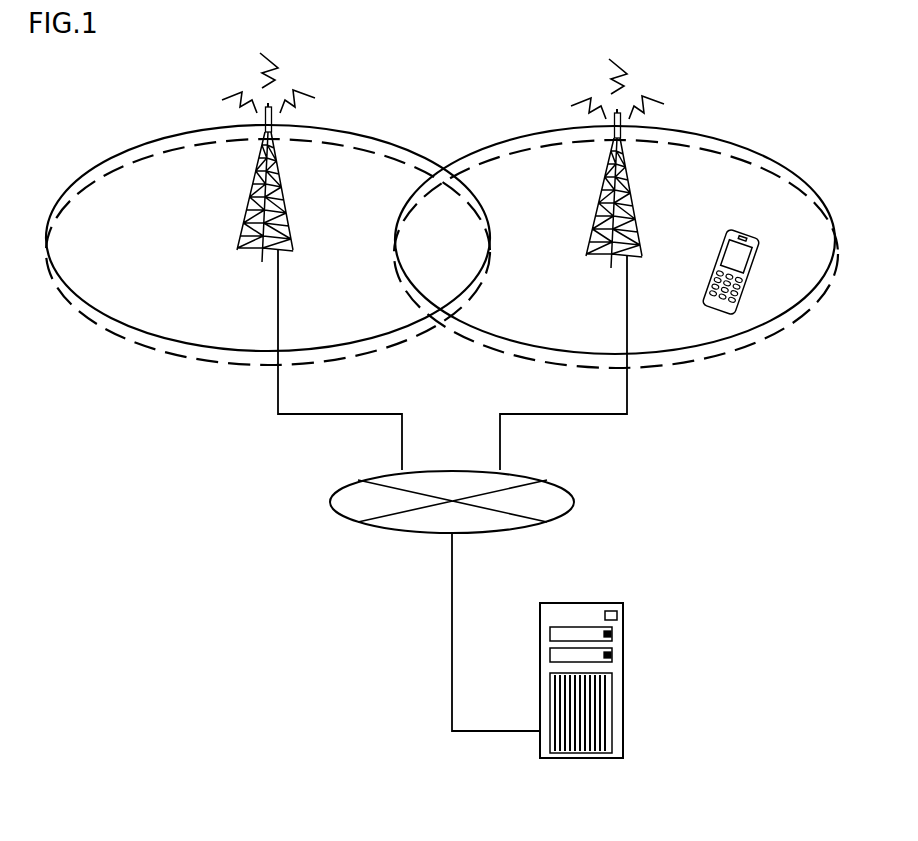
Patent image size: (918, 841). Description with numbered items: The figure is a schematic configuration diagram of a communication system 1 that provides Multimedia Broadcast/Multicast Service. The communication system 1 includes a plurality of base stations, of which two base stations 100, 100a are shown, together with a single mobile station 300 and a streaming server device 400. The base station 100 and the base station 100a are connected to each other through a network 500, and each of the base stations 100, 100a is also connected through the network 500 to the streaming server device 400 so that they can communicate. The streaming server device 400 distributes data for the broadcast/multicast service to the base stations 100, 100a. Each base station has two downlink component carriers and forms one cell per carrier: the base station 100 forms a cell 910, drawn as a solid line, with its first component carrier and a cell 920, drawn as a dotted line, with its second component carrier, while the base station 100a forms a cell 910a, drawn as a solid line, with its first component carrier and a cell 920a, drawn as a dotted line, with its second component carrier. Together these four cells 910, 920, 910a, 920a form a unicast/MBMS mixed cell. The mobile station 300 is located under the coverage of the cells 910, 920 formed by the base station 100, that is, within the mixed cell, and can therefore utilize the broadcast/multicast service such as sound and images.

The communication system 1 is at (730, 87).
The base station 100 is at (601, 197).
The base station 100a is at (256, 190).
The mobile station 300 is at (745, 237).
The streaming server device 400 is at (594, 603).
The network 500 is at (574, 502).
The cell 910 is at (677, 347).
The cell 910a is at (132, 326).
The cell 920 is at (745, 345).
The cell 920a is at (180, 356).